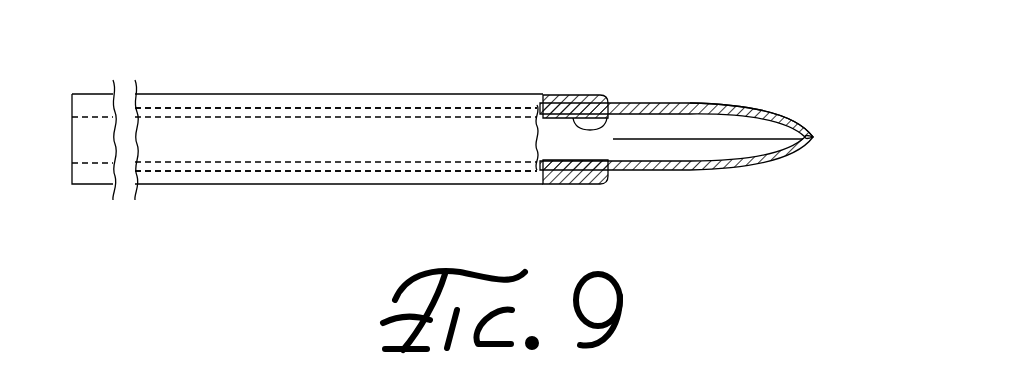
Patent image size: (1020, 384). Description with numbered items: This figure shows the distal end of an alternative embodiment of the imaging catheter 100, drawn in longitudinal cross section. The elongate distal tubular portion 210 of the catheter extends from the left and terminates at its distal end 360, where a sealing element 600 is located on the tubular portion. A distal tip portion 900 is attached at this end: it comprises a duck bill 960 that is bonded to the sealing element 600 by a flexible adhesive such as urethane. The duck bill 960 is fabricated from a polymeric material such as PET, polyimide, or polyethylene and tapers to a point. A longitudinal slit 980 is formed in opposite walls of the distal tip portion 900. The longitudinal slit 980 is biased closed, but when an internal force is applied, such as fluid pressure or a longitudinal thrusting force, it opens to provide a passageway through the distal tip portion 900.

The imaging catheter 100 is at (340, 73).
The distal tubular portion 210 is at (467, 110).
The sealing element 600 is at (590, 95).
The distal end 360 is at (623, 107).
The distal tip portion 900 is at (742, 76).
The duck bill 960 is at (778, 110).
The longitudinal slit 980 is at (725, 140).